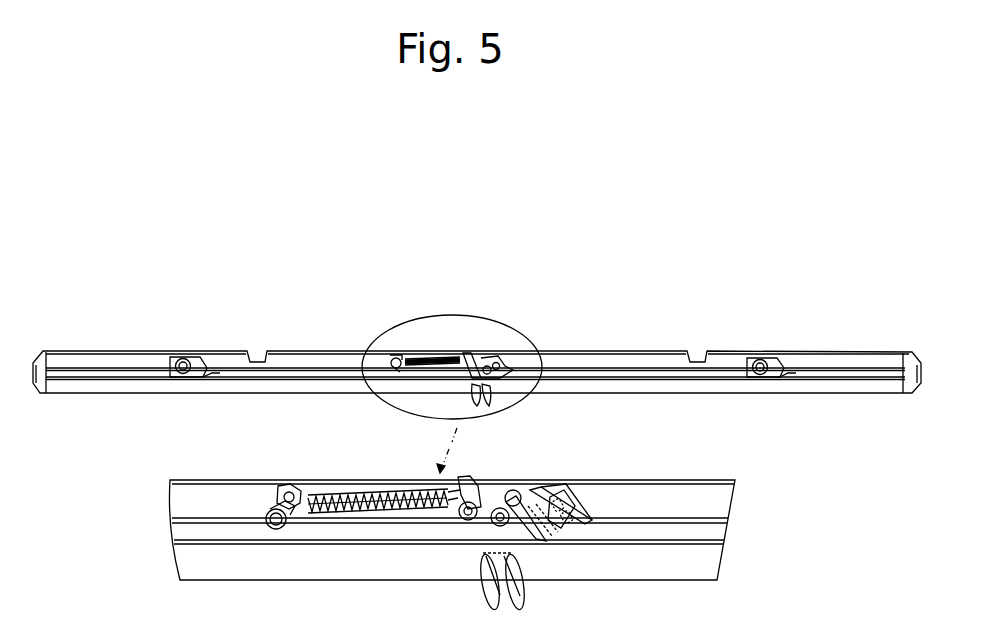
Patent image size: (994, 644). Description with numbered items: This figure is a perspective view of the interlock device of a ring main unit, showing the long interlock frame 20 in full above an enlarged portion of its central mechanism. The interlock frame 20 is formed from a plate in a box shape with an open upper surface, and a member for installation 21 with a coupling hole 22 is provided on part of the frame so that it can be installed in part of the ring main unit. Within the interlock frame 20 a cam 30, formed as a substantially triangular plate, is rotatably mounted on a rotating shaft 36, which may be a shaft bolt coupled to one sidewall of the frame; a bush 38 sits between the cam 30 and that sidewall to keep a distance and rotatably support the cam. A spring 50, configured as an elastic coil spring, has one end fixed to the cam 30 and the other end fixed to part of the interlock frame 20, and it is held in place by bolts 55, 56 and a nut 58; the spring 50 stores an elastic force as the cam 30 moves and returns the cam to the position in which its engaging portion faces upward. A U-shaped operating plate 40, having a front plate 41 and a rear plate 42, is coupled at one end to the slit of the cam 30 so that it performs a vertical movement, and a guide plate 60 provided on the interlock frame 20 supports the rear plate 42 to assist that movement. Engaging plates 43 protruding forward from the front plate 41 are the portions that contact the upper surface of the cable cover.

The interlock frame 20 is at (732, 387).
The member for installation 21 is at (758, 367).
The coupling hole 22 is at (777, 375).
The cam 30 is at (490, 487).
The rotating shaft 36 is at (540, 498).
The bush 38 is at (512, 503).
The operating plate 40 is at (530, 588).
The front plate 41 is at (480, 570).
The rear plate 42 is at (512, 526).
The engaging plate 43 is at (480, 590).
The spring 50 is at (367, 498).
The bolt 55 is at (478, 483).
The bolt 56 is at (288, 472).
The nut 58 is at (267, 505).
The guide plate 60 is at (587, 515).